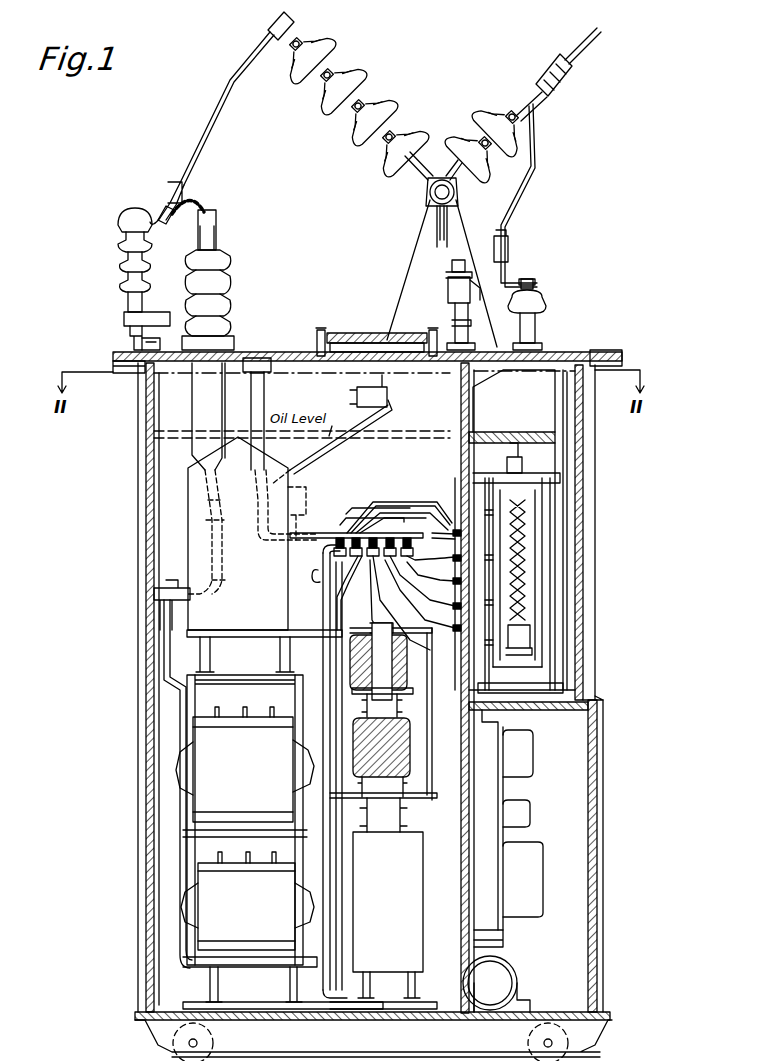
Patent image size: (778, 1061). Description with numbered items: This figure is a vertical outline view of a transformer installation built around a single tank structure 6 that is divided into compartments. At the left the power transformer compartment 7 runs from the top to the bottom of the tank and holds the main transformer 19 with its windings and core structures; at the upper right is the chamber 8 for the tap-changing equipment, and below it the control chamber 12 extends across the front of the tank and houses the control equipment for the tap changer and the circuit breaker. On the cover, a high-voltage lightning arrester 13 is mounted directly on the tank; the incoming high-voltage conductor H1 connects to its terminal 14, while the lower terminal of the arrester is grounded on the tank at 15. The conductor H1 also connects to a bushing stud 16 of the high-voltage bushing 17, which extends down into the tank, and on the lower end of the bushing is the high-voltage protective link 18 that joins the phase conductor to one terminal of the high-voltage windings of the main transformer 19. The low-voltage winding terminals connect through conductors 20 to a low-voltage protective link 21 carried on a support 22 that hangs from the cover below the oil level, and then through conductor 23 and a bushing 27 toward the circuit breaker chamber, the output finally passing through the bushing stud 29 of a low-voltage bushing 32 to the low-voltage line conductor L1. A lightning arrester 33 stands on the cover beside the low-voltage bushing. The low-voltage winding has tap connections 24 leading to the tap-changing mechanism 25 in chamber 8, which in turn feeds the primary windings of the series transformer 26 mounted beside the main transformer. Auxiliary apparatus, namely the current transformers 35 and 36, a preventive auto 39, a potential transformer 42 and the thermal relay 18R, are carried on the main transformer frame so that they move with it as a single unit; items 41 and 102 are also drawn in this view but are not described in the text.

The high-voltage conductor H1 is at (222, 100).
The low-voltage circuit conductor L1 is at (582, 56).
The tank structure 6 is at (138, 490).
The power transformer compartment 7 is at (162, 400).
The tap-changing equipment chamber 8 is at (566, 456).
The control chamber 12 is at (566, 785).
The high-voltage lightning arrester 13 is at (122, 268).
The lightning arrester terminal 14 is at (158, 218).
The ground connection 15 is at (140, 350).
The bushing stud 16 is at (207, 212).
The high-voltage bushing 17 is at (230, 295).
The high-voltage protective link 18 is at (236, 503).
The winding section 18R is at (306, 494).
The main transformer 19 is at (180, 736).
The conductor 20 is at (315, 531).
The low-voltage protective link 21 is at (256, 522).
The support 22 is at (268, 402).
The conductor 23 is at (312, 462).
The tap connection 24 is at (320, 771).
The tap-changing mechanism 25 is at (555, 600).
The series transformer 26 is at (425, 915).
The bushing 27 is at (368, 387).
The bushing stud 29 is at (528, 282).
The low-voltage bushing 32 is at (545, 306).
The lightning arrester 33 is at (450, 287).
The current transformer 35 is at (208, 795).
The current transformer 36 is at (204, 878).
The preventive auto 39 is at (412, 770).
The pipe 41 is at (500, 978).
The potential transformer 42 is at (410, 668).
The connector 102 is at (198, 582).